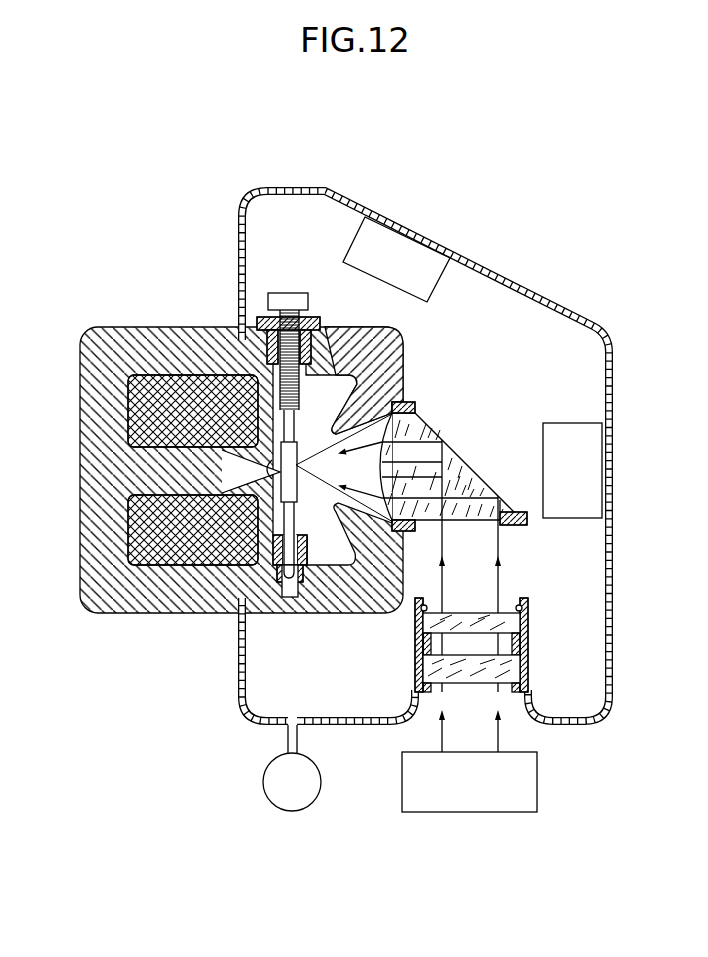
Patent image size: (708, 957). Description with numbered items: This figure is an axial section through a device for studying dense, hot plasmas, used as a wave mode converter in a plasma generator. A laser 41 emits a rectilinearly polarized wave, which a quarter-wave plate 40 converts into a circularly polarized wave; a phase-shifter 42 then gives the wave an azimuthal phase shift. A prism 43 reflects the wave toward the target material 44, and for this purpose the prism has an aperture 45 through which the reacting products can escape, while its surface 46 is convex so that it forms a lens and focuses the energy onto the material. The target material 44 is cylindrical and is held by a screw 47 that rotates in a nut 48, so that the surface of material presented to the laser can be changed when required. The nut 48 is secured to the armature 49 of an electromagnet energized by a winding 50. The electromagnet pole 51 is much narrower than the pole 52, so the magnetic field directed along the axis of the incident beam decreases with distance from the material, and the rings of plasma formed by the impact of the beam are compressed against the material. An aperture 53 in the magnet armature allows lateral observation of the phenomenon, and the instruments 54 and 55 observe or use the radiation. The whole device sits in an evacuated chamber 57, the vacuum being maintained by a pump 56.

The quarter-wave plate 40 is at (472, 680).
The laser 41 is at (410, 779).
The phase-shifter 42 is at (459, 614).
The prism 43 is at (458, 526).
The target material 44 is at (292, 464).
The aperture 45 is at (458, 468).
The convex surface 46 is at (377, 462).
The screw 47 is at (289, 310).
The nut 48 is at (308, 318).
The armature 49 is at (158, 337).
The winding 50 is at (137, 405).
The electromagnet pole 51 is at (265, 465).
The electromagnet pole 52 is at (337, 433).
The aperture 53 is at (353, 342).
The instrument 54 is at (572, 470).
The instrument 55 is at (422, 263).
The pump 56 is at (245, 794).
The evacuated chamber 57 is at (555, 304).